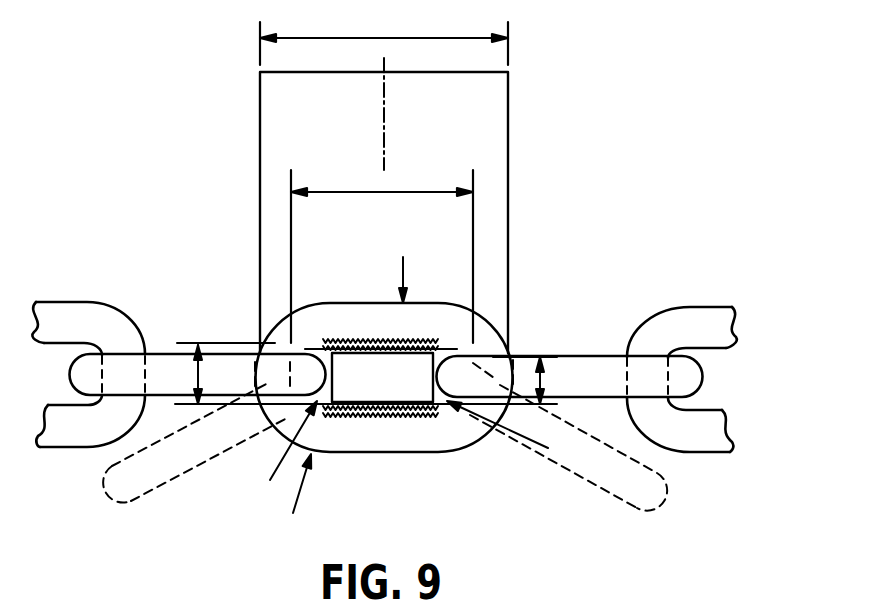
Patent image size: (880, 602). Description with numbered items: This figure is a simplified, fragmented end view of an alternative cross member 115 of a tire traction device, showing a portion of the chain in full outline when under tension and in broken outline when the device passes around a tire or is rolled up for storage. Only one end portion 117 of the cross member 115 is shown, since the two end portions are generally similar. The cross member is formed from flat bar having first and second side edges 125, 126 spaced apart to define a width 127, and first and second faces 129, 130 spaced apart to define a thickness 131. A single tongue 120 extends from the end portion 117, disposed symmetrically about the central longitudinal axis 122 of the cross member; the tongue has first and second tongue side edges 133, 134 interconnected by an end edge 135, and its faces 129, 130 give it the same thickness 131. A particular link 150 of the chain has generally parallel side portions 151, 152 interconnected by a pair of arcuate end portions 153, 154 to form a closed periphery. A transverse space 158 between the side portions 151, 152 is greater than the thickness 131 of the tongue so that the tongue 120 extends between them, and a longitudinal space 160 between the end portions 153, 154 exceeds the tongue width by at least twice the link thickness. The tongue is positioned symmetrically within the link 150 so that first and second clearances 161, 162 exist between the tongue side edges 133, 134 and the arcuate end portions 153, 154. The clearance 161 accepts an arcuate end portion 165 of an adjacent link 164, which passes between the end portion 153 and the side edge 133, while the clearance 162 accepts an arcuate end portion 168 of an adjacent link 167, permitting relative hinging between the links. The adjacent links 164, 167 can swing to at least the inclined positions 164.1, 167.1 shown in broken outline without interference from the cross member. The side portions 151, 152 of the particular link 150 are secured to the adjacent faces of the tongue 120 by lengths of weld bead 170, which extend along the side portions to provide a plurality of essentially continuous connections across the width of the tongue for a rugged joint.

The cross member 115 is at (642, 178).
The end portion 117 is at (580, 182).
The tongue 120 is at (375, 436).
The central longitudinal axis 122 is at (388, 128).
The first side edge 125 is at (259, 104).
The second side edge 126 is at (510, 110).
The width 127 is at (402, 38).
The first face 129 is at (415, 343).
The second face 130 is at (422, 420).
The thickness 131 is at (556, 378).
The first tongue side edge 133 is at (315, 343).
The second tongue side edge 134 is at (490, 340).
The end edge 135 is at (370, 390).
The particular link 150 is at (346, 388).
The side portion 151 is at (343, 315).
The side portion 152 is at (402, 437).
The arcuate end portion 153 is at (263, 420).
The arcuate end portion 154 is at (507, 411).
The transverse space 158 is at (178, 368).
The longitudinal space 160 is at (354, 190).
The first clearance 161 is at (282, 460).
The second clearance 162 is at (521, 433).
The adjacent link 164 is at (160, 362).
The inclined position 164.1 is at (111, 477).
The arcuate end portion 165 is at (307, 372).
The adjacent link 167 is at (607, 377).
The inclined position 167.1 is at (607, 488).
The arcuate end portion 168 is at (508, 352).
The weld bead 170 is at (363, 338).